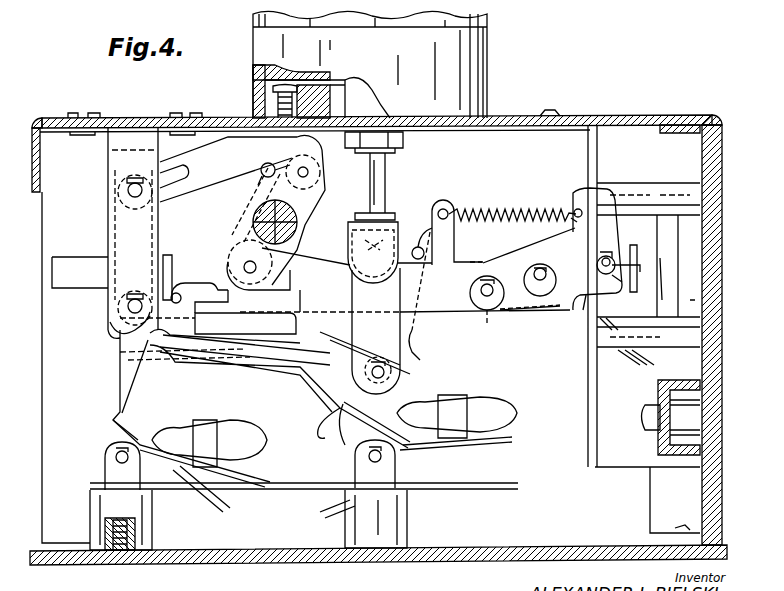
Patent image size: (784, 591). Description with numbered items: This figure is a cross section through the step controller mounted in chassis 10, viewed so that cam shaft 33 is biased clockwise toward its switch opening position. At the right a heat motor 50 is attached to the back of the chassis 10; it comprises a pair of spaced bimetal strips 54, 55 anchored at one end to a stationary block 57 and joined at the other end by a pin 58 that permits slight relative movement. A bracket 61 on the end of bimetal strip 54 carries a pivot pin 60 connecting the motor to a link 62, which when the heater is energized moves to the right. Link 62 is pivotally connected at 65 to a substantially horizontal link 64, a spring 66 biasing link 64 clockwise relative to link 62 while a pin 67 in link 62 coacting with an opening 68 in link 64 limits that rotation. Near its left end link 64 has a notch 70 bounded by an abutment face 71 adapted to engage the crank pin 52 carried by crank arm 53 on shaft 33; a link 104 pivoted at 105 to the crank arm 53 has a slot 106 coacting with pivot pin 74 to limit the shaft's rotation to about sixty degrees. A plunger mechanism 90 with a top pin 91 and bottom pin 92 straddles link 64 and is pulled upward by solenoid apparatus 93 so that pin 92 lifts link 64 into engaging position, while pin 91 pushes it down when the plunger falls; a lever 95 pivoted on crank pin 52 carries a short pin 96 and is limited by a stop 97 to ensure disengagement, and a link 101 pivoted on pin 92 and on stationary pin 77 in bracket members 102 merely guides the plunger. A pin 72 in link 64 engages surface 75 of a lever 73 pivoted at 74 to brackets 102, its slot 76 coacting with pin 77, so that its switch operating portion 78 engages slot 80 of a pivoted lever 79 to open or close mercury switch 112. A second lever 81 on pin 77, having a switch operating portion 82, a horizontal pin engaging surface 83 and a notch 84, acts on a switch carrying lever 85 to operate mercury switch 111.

The chassis 10 is at (517, 116).
The cam shaft 33 is at (300, 222).
The heat motor 50 is at (672, 257).
The crank pin 52 is at (245, 264).
The crank arm 53 is at (240, 240).
The bimetal strip 54 is at (650, 208).
The bimetal strip 55 is at (612, 303).
The stationary block 57 is at (690, 278).
The pin 58 is at (633, 270).
The pivot pin 60 is at (590, 302).
The bracket 61 is at (630, 245).
The link 62 is at (584, 300).
The link 64 is at (405, 299).
The pivotal connection 65 is at (487, 312).
The spring 66 is at (522, 205).
The pin 67 is at (540, 268).
The opening 68 is at (530, 262).
The notch 70 is at (280, 287).
The abutment face 71 is at (222, 288).
The pin 72 is at (179, 292).
The lever 73 is at (258, 352).
The pivot pin 74 is at (128, 192).
The surface 75 is at (170, 262).
The slot 76 is at (126, 305).
The stationary pin 77 is at (110, 327).
The switch operating portion 78 is at (316, 396).
The pivoted lever 79 is at (360, 432).
The slot 80 is at (340, 412).
The second switch operating lever 81 is at (130, 360).
The switch operating portion 82 is at (122, 388).
The pin engaging surface 83 is at (255, 323).
The notch 84 is at (182, 345).
The switch carrying lever 85 is at (132, 428).
The plunger mechanism 90 is at (385, 235).
The top pin 91 is at (347, 242).
The bottom pin 92 is at (386, 371).
The solenoid apparatus 93 is at (466, 60).
The lever 95 is at (416, 332).
The short pin 96 is at (268, 292).
The stop 97 is at (416, 246).
The link 101 is at (332, 350).
The bracket members 102 is at (122, 160).
The link 104 is at (203, 160).
The pivotal connection 105 is at (308, 172).
The slot 106 is at (186, 180).
The mercury switch 111 is at (232, 438).
The mercury switch 112 is at (478, 406).